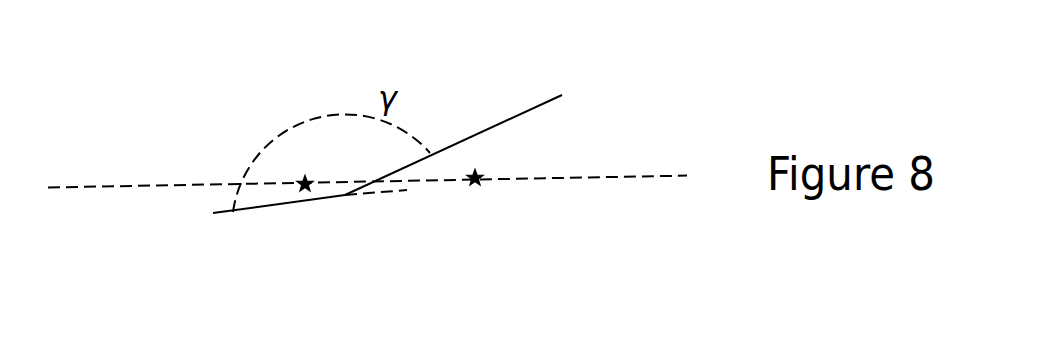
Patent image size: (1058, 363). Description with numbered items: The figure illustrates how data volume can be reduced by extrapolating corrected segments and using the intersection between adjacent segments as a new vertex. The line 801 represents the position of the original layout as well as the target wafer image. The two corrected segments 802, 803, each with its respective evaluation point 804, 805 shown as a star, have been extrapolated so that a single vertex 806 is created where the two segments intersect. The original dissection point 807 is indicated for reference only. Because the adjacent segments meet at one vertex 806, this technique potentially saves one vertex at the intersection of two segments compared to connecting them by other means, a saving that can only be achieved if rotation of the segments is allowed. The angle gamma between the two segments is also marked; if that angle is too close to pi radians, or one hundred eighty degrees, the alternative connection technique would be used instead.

The line 801 is at (211, 195).
The corrected segment 802 is at (303, 221).
The corrected segment 803 is at (502, 109).
The evaluation point 804 is at (301, 160).
The evaluation point 805 is at (498, 201).
The vertex 806 is at (355, 210).
The original dissection point 807 is at (415, 195).